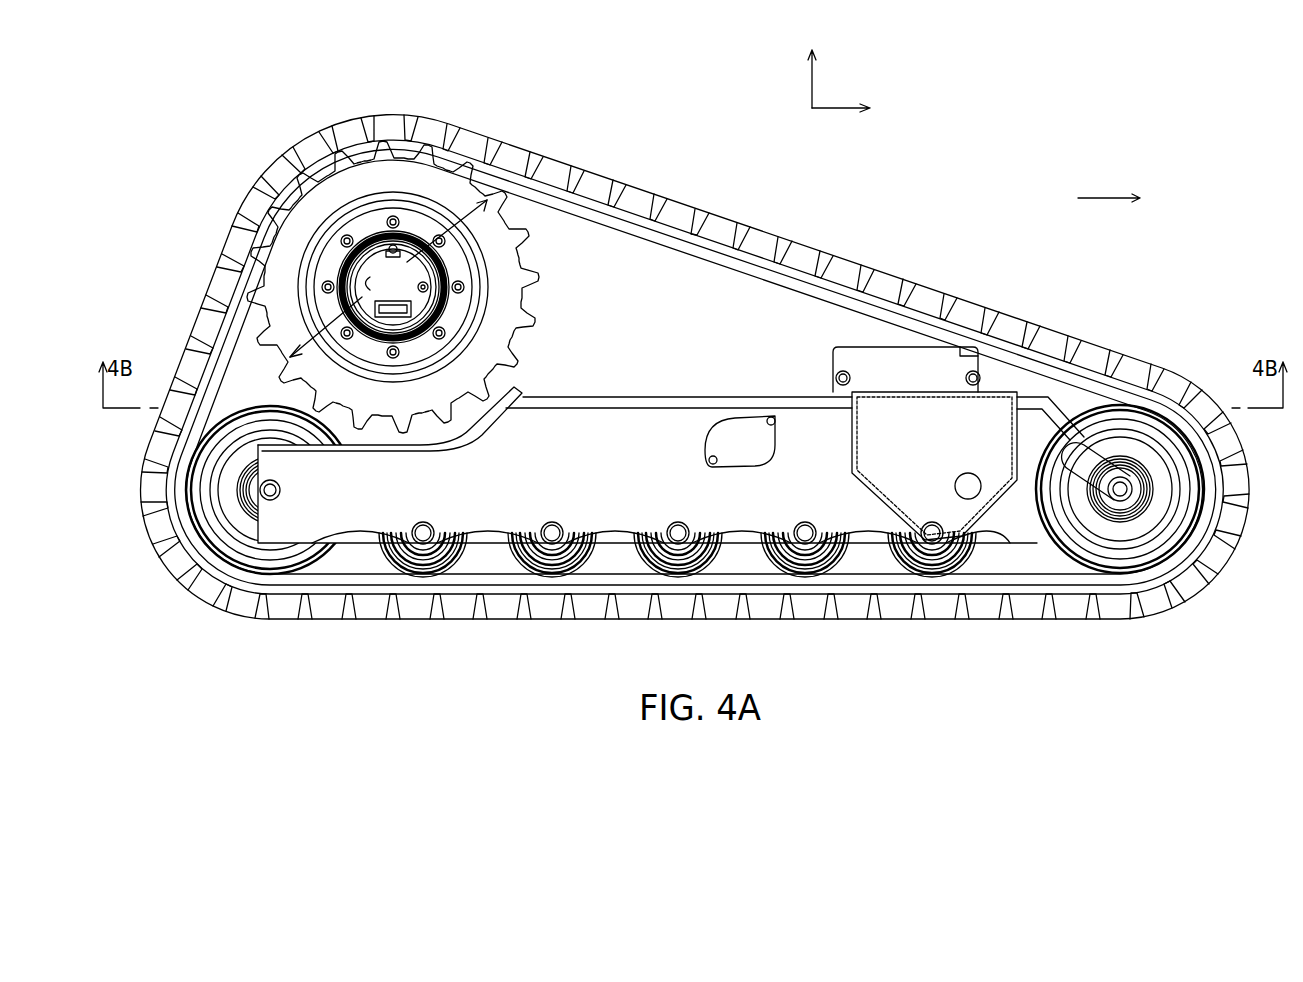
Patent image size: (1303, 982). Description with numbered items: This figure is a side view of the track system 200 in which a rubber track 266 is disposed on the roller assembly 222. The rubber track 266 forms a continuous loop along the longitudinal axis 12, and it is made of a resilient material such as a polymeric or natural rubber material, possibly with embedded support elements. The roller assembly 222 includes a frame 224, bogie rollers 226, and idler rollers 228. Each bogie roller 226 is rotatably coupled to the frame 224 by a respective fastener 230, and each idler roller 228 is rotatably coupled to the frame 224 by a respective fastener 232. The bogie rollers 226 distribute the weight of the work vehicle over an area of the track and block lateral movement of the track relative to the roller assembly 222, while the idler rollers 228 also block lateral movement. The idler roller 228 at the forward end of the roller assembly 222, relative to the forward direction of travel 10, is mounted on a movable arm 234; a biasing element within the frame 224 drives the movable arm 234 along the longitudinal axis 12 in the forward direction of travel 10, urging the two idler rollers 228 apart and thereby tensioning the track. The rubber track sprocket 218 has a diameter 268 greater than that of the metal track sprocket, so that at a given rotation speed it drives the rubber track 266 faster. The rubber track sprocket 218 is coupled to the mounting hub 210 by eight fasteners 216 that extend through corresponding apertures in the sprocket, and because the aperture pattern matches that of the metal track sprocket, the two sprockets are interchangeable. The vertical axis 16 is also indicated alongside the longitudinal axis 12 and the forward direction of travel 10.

The forward direction of travel 10 is at (1107, 197).
The longitudinal axis 12 is at (840, 108).
The vertical axis 16 is at (812, 84).
The track system 200 is at (930, 211).
The mounting hub 210 is at (407, 228).
The fasteners 216 is at (463, 291).
The rubber track sprocket 218 is at (512, 278).
The roller assembly 222 is at (733, 346).
The frame 224 is at (637, 420).
The bogie rollers 226 is at (452, 572).
The idler rollers 228 is at (250, 550).
The fastener 230 is at (425, 533).
The fastener 232 is at (276, 490).
The movable arm 234 is at (1050, 430).
The rubber track 266 is at (978, 305).
The diameter 268 is at (397, 281).